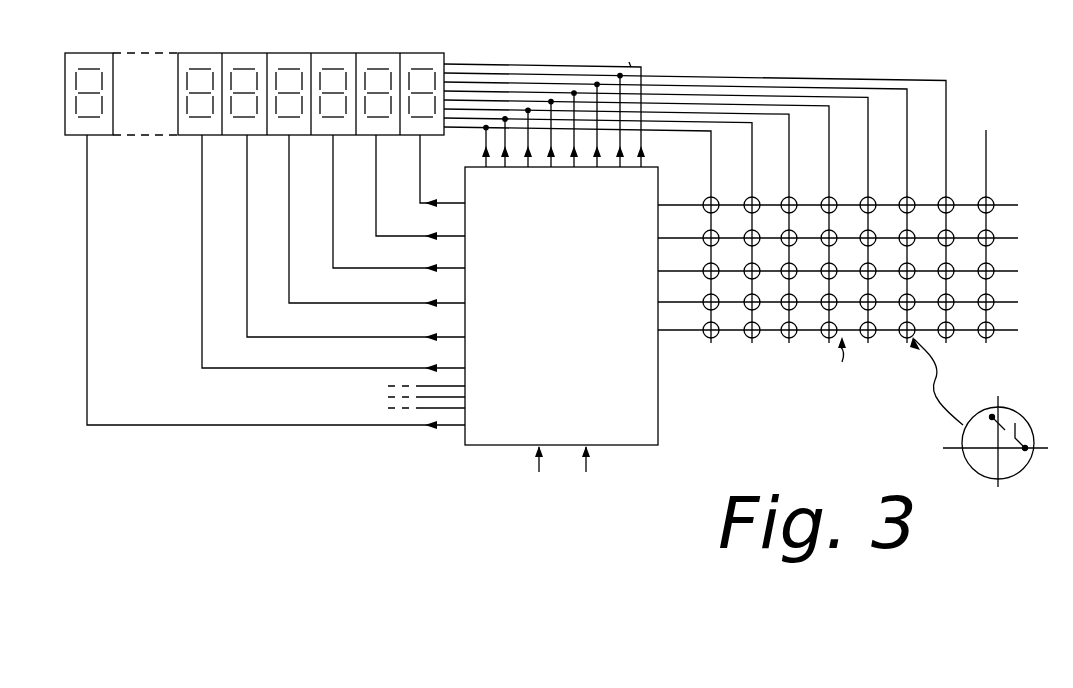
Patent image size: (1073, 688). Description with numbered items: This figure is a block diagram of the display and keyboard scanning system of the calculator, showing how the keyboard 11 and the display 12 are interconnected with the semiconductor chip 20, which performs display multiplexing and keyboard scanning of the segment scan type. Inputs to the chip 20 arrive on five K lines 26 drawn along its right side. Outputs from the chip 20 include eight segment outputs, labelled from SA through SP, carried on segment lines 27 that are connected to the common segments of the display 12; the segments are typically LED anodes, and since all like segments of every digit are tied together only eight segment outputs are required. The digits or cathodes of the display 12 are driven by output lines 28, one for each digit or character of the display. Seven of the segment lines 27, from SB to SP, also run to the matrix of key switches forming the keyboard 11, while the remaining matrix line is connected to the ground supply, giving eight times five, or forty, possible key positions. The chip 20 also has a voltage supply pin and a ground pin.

The keyboard 11 is at (975, 222).
The display 12 is at (411, 53).
The semiconductor chip 20 is at (576, 385).
The K lines 26 is at (697, 303).
The segment lines 27 is at (628, 143).
The output lines 28 is at (353, 338).